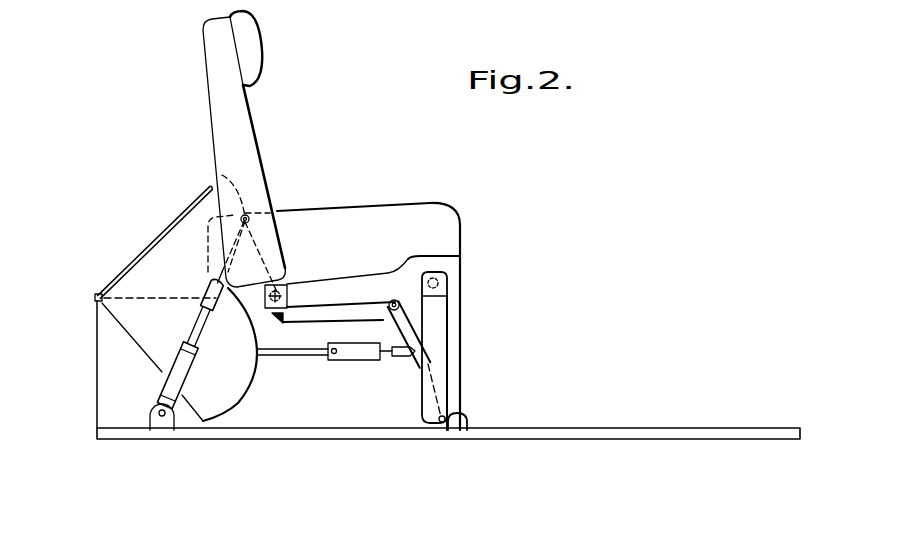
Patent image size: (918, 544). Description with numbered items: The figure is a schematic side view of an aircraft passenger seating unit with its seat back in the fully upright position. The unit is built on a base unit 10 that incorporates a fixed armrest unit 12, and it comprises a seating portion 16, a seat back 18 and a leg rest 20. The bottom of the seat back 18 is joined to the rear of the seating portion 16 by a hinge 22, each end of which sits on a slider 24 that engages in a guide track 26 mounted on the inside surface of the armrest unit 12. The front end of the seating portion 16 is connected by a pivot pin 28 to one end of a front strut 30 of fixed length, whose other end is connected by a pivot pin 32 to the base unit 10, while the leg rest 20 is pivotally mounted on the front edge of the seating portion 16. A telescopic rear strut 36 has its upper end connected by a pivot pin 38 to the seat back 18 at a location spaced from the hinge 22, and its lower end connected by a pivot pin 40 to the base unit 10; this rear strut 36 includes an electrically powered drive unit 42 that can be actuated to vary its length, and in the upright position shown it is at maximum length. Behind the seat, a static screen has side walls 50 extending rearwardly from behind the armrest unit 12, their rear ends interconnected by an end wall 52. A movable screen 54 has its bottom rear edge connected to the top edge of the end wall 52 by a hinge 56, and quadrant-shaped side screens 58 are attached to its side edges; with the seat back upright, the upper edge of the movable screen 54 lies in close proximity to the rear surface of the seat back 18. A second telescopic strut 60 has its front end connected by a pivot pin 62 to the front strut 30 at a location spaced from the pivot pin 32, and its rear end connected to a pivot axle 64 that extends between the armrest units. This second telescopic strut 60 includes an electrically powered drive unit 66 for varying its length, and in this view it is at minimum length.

The base unit 10 is at (558, 428).
The armrest unit 12 is at (433, 218).
The seating portion 16 is at (350, 288).
The seat back 18 is at (233, 118).
The leg rest 20 is at (443, 353).
The hinge 22 is at (290, 287).
The slider 24 is at (283, 312).
The guide track 26 is at (394, 298).
The pivot pin 28 is at (460, 256).
The front strut 30 is at (407, 330).
The pivot pin 32 is at (466, 428).
The telescopic rear strut 36 is at (213, 280).
The pivot pin 38 is at (218, 172).
The pivot pin 40 is at (163, 418).
The electrically powered drive unit 42 is at (152, 375).
The side wall 50 is at (108, 408).
The end wall 52 is at (97, 333).
The movable screen 54 is at (148, 248).
The hinge 56 is at (97, 295).
The side screen 58 is at (210, 388).
The second telescopic strut 60 is at (392, 358).
The pivot pin 62 is at (433, 383).
The pivot axle 64 is at (335, 357).
The electrically powered drive unit 66 is at (363, 360).